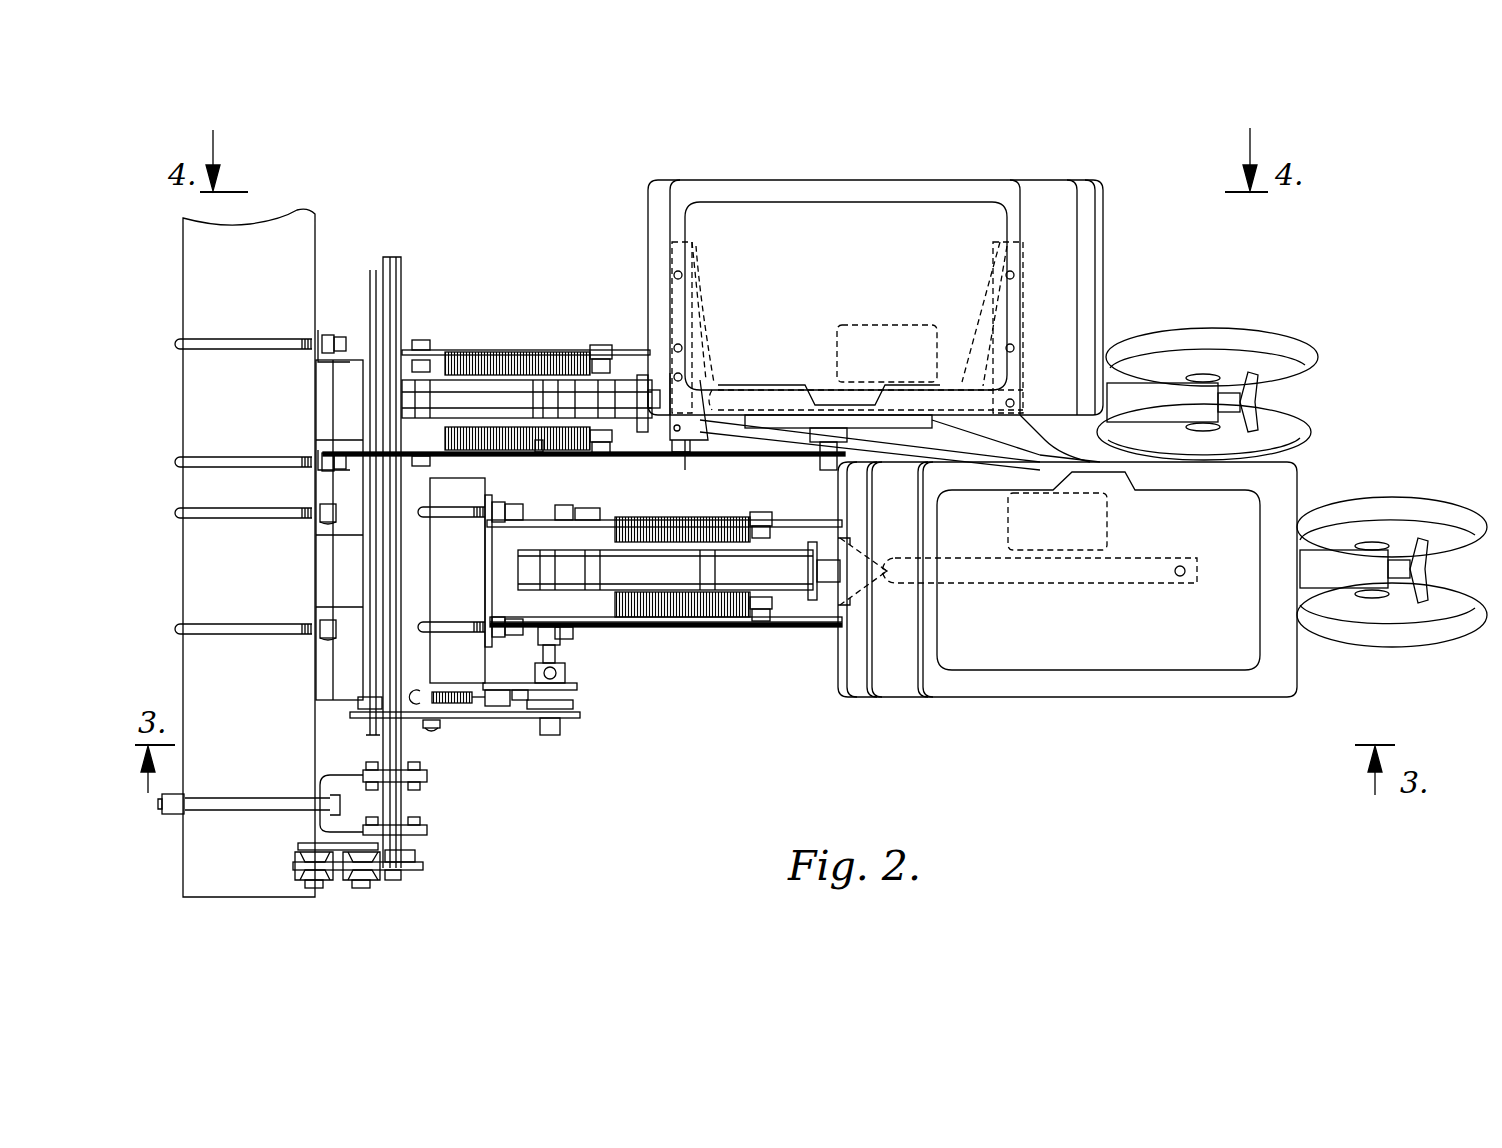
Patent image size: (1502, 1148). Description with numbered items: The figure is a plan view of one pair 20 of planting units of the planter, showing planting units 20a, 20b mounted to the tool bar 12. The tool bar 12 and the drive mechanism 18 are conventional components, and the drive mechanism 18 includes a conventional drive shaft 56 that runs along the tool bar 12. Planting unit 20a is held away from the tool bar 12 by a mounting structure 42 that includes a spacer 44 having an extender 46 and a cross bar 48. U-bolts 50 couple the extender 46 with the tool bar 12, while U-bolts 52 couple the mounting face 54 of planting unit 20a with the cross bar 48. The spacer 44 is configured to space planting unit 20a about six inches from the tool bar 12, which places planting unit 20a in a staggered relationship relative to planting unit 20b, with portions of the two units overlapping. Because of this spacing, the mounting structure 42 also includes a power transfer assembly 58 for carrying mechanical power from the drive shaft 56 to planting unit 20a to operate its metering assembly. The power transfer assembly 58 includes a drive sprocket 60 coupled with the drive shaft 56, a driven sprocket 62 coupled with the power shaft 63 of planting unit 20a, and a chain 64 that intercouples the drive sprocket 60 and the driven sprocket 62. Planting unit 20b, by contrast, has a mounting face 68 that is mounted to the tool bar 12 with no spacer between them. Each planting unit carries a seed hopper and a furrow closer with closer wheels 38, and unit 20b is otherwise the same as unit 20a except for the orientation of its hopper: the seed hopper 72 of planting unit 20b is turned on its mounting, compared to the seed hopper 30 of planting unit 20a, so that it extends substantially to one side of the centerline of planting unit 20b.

The tool bar 12 is at (265, 890).
The drive mechanism 18 is at (452, 894).
The pair of planting units 20 is at (1278, 296).
The planting unit 20a is at (1306, 476).
The planting unit 20b is at (1118, 249).
The seed hopper 30 is at (1030, 687).
The closer wheels 38 is at (1318, 428).
The mounting structure 42 is at (478, 732).
The spacer 44 is at (340, 560).
The extender 46 is at (365, 595).
The cross bar 48 is at (470, 487).
The U-bolts 50 is at (278, 335).
The U-bolts 52 is at (462, 512).
The mounting face 54 is at (485, 615).
The drive shaft 56 is at (388, 300).
The power transfer assembly 58 is at (597, 690).
The drive sprocket 60 is at (345, 705).
The driven sprocket 62 is at (575, 705).
The power shaft 63 is at (560, 648).
The chain 64 is at (515, 725).
The mounting face 68 is at (312, 362).
The seed hopper 72 is at (765, 187).